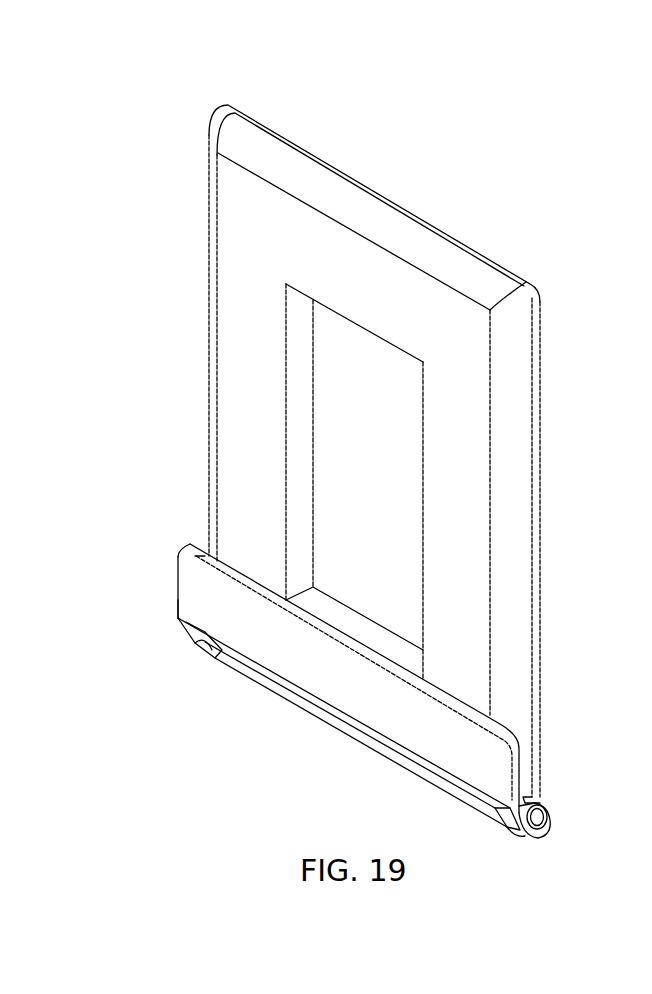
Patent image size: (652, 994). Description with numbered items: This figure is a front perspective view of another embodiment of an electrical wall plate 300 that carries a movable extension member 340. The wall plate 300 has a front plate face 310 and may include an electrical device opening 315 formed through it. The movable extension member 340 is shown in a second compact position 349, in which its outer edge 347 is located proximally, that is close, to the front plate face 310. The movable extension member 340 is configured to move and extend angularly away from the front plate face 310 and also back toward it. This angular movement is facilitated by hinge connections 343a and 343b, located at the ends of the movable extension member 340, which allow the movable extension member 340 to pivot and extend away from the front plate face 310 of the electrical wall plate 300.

The electrical wall plate 300 is at (404, 148).
The front plate face 310 is at (240, 193).
The electrical device opening 315 is at (322, 366).
The movable extension member 340 is at (168, 546).
The outer edge 347 is at (204, 555).
The second compact position 349 is at (165, 605).
The hinge connection 343b is at (197, 646).
The hinge connection 343a is at (546, 823).